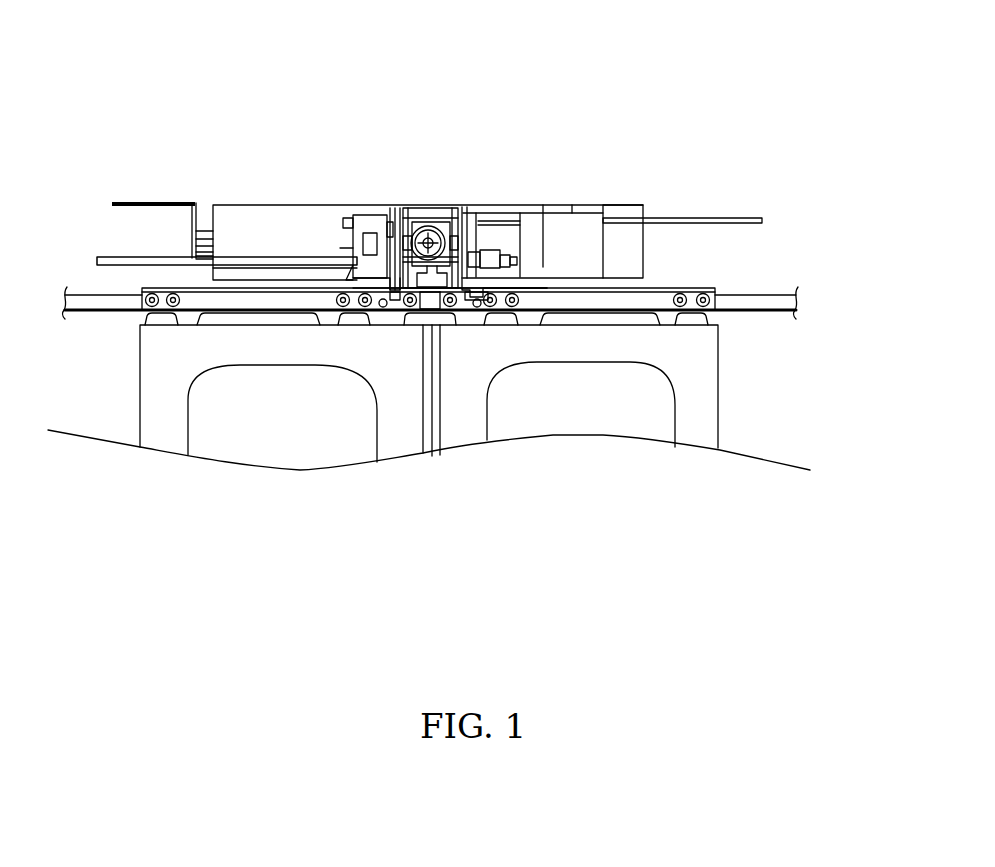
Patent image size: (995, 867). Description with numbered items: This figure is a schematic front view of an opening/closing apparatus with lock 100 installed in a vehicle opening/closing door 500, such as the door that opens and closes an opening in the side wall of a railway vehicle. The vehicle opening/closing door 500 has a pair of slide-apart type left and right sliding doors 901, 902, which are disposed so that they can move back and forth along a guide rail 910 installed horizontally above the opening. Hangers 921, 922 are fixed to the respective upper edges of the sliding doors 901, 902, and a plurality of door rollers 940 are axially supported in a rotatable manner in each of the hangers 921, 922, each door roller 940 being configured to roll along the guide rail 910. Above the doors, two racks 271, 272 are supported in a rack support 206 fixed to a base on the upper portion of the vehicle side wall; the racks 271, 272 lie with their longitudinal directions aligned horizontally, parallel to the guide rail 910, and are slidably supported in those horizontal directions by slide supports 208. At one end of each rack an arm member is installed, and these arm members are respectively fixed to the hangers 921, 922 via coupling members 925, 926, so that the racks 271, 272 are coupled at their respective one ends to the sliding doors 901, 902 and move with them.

The vehicle opening/closing door 500 is at (647, 70).
The opening/closing apparatus with lock 100 is at (520, 117).
The rack support 206 is at (398, 207).
The slide supports 208 is at (413, 207).
The rack 271 is at (683, 220).
The rack 272 is at (178, 261).
The sliding door 901 is at (400, 437).
The sliding door 902 is at (468, 437).
The guide rail 910 is at (781, 312).
The hanger 921 is at (218, 300).
The hanger 922 is at (640, 295).
The coupling member 925 is at (290, 287).
The coupling member 926 is at (565, 290).
The door rollers 940 is at (173, 307).